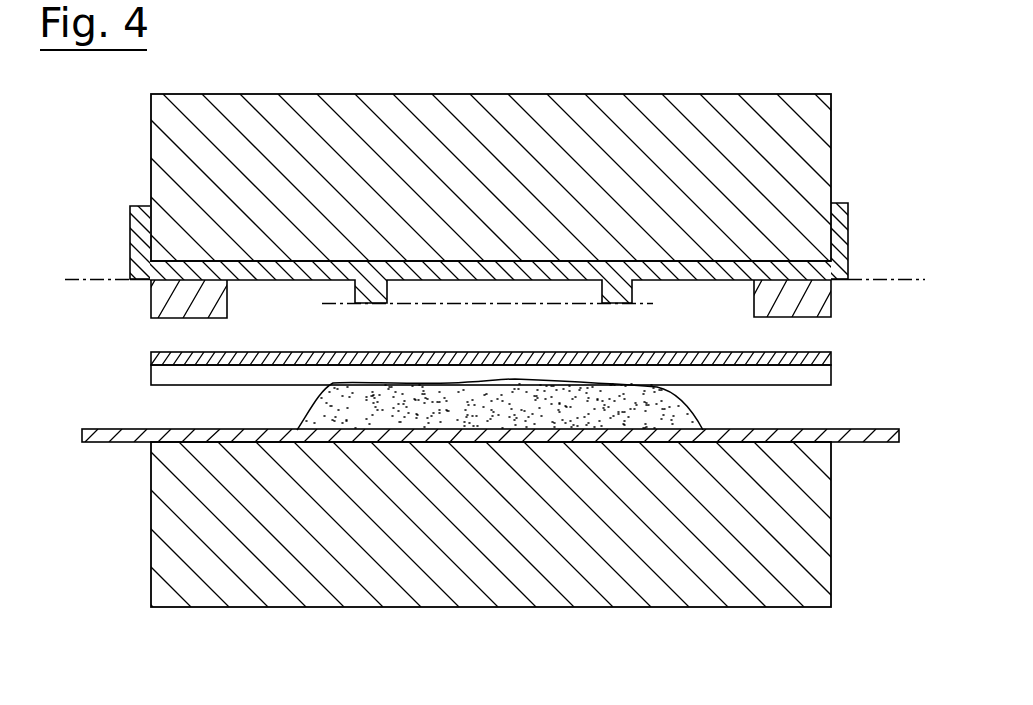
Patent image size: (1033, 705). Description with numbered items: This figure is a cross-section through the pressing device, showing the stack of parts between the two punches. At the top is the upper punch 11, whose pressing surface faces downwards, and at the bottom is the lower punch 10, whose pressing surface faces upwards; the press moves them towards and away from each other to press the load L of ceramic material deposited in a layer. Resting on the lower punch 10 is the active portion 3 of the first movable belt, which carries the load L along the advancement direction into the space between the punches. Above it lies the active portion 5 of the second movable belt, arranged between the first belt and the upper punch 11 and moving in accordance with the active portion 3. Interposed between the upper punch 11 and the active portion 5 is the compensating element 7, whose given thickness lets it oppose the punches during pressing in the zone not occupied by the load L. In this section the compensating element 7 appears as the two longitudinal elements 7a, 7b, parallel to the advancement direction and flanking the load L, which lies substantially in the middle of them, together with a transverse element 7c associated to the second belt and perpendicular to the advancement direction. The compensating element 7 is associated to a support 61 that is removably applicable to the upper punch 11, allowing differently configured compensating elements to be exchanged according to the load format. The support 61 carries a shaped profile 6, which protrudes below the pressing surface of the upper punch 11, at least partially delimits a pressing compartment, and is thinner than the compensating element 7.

The upper punch 11 is at (524, 93).
The lower punch 10 is at (523, 608).
The support 61 is at (143, 205).
The shaped profile 6 is at (620, 290).
The compensating element 7 is at (488, 295).
The longitudinal element 7a is at (167, 279).
The longitudinal element 7b is at (788, 300).
The transverse element 7c is at (208, 378).
The active portion of the second movable belt 5 is at (151, 353).
The active portion of the first movable belt 3 is at (772, 435).
The load L is at (501, 419).